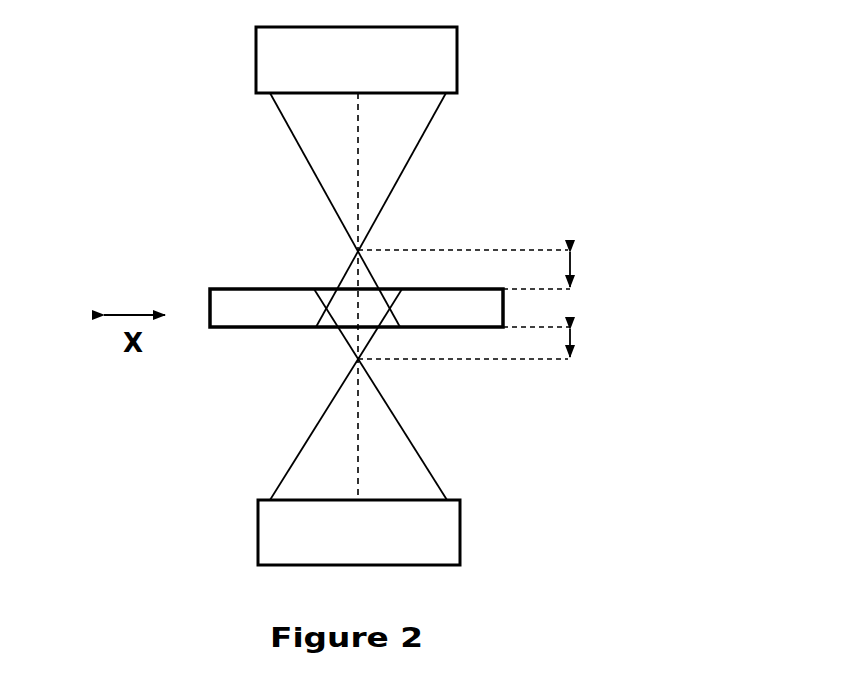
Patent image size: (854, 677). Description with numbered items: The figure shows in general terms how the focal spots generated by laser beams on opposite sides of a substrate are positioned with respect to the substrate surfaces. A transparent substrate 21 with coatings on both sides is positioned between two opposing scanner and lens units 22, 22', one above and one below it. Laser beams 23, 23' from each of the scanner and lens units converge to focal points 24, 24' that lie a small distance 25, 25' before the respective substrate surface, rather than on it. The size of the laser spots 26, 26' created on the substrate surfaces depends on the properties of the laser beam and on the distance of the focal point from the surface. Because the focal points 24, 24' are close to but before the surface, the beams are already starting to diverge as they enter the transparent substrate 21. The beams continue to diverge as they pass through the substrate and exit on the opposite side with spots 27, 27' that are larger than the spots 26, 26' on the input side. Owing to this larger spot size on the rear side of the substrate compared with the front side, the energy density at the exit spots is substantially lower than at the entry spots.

The transparent substrate 21 is at (208, 291).
The scanner and lens unit 22 is at (426, 60).
The scanner and lens unit 22' is at (418, 530).
The laser beam 23 is at (448, 210).
The laser beam 23' is at (417, 394).
The focal point 24 is at (254, 164).
The focal point 24' is at (244, 435).
The distance 25 is at (523, 264).
The distance 25' is at (530, 360).
The laser spot 26 is at (236, 211).
The laser spot 26' is at (231, 394).
The spot 27 is at (204, 366).
The spot 27' is at (191, 225).